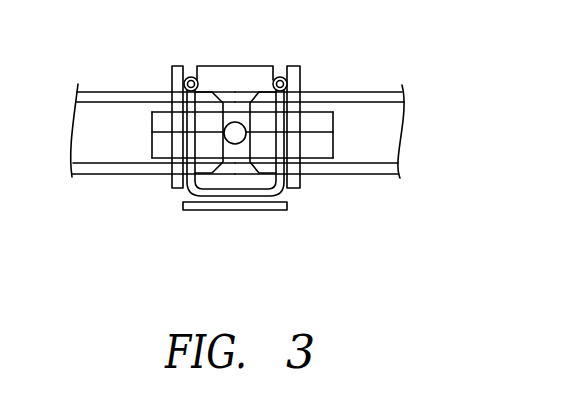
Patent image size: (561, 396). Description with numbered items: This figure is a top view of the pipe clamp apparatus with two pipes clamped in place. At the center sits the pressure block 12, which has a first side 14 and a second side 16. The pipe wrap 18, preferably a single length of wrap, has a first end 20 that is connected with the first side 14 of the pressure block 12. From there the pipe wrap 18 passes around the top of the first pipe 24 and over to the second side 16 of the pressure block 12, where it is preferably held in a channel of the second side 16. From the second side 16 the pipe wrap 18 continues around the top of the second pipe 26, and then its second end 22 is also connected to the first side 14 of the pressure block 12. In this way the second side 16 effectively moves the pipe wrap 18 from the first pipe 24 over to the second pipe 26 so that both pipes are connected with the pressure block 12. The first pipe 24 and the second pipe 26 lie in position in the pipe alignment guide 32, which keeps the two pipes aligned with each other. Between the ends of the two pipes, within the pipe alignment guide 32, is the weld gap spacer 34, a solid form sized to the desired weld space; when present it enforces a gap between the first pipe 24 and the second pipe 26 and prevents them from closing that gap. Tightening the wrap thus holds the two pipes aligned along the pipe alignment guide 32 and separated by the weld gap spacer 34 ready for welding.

The pressure block 12 is at (252, 66).
The first side 14 is at (205, 66).
The second side 16 is at (293, 190).
The pipe wrap 18 is at (279, 123).
The first end 20 is at (184, 86).
The second end 22 is at (288, 78).
The first pipe 24 is at (98, 165).
The second pipe 26 is at (388, 175).
The pipe alignment guide 32 is at (333, 134).
The weld gap spacer 34 is at (226, 139).